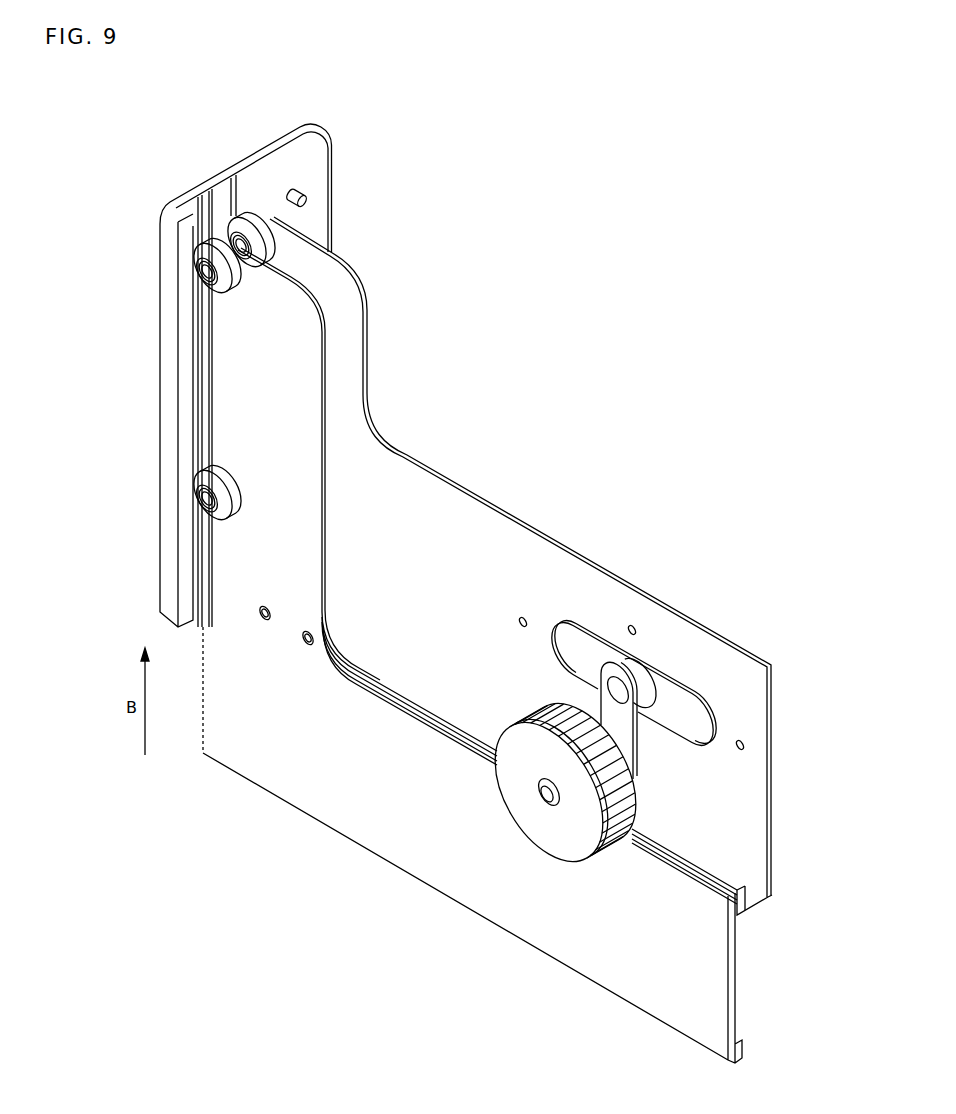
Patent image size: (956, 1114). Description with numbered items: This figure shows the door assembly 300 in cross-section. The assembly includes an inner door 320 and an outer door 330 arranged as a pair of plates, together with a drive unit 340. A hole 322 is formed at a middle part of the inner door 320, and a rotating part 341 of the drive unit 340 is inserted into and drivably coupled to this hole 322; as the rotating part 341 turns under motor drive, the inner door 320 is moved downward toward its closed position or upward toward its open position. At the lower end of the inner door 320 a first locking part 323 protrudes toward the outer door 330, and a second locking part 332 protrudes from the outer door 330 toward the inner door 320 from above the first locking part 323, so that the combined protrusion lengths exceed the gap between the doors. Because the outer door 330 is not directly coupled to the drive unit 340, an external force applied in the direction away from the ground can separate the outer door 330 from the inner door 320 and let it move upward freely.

The door assembly 300 is at (139, 116).
The inner door 320 is at (443, 518).
The hole 322 is at (683, 688).
The first locking part 323 is at (752, 912).
The outer door 330 is at (260, 752).
The second locking part 332 is at (752, 888).
The drive unit 340 is at (673, 827).
The rotating part 341 is at (642, 677).